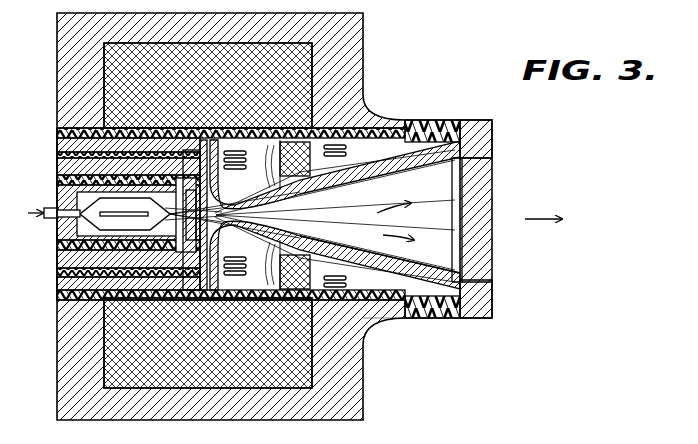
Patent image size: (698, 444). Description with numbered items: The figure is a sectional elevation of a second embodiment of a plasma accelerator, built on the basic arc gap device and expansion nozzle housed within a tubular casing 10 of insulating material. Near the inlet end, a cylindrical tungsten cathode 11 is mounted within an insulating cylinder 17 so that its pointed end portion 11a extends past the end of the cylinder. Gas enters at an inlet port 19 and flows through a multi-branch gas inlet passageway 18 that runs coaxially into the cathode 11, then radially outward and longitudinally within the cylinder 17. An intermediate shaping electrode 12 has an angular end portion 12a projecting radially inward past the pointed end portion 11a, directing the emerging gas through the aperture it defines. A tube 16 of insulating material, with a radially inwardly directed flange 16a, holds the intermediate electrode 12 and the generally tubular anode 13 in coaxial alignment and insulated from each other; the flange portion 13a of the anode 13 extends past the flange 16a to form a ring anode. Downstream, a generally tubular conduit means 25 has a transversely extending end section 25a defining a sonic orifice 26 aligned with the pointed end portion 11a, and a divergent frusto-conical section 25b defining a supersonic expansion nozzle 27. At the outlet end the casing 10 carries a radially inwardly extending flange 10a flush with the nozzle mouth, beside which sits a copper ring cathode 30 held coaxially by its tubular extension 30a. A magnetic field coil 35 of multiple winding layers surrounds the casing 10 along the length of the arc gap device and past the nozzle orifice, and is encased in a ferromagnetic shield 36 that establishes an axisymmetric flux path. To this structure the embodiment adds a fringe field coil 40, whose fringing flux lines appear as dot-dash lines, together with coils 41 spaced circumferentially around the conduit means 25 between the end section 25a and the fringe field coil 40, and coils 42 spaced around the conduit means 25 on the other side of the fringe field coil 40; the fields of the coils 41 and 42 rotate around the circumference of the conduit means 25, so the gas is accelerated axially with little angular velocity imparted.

The tubular casing 10 is at (57, 133).
The radially inwardly extending flange 10a is at (492, 150).
The cathode 11 is at (70, 195).
The pointed end portion 11a is at (160, 218).
The intermediate shaping electrode 12 is at (60, 165).
The angular end portion 12a is at (168, 148).
The anode 13 is at (60, 150).
The flange portion 13a is at (243, 115).
The tube 16 is at (57, 276).
The radially inwardly directed flange 16a is at (228, 136).
The cylinder 17 is at (62, 257).
The multi-branch gas inlet passageway 18 is at (62, 241).
The inlet port 19 is at (62, 221).
The conduit means 25 is at (443, 163).
The end section 25a is at (207, 304).
The frusto-conical section 25b is at (375, 270).
The sonic orifice 26 is at (251, 193).
The supersonic expansion nozzle 27 is at (398, 190).
The ring cathode 30 is at (491, 135).
The tubular extension 30a is at (445, 122).
The magnetic field coil 35 is at (226, 74).
The ferromagnetic shield 36 is at (361, 32).
The fringe field coil 40 is at (208, 343).
The coils 41 is at (238, 152).
The coils 42 is at (361, 330).